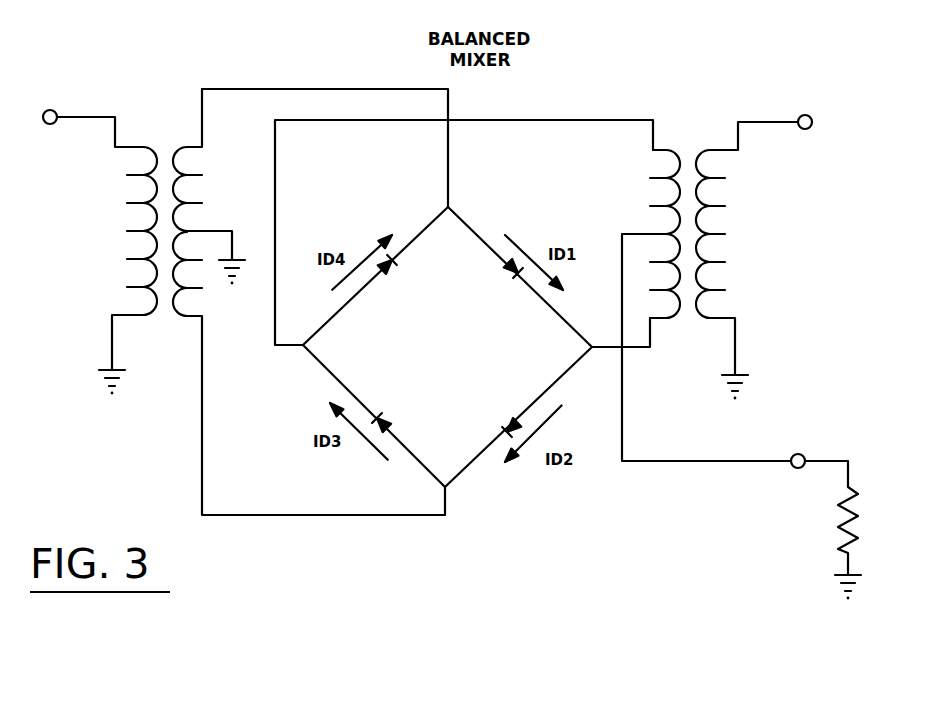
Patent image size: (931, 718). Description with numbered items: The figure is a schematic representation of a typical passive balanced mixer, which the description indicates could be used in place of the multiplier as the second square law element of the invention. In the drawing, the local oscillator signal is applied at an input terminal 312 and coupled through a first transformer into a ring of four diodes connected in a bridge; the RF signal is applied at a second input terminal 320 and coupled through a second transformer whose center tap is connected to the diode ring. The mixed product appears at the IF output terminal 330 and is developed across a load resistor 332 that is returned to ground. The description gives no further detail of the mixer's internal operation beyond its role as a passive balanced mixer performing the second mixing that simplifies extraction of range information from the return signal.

The local oscillator (LO) input terminal 312 is at (46, 126).
The RF input terminal 320 is at (809, 116).
The IF output terminal 330 is at (806, 454).
The load resistor R1 332 is at (822, 518).